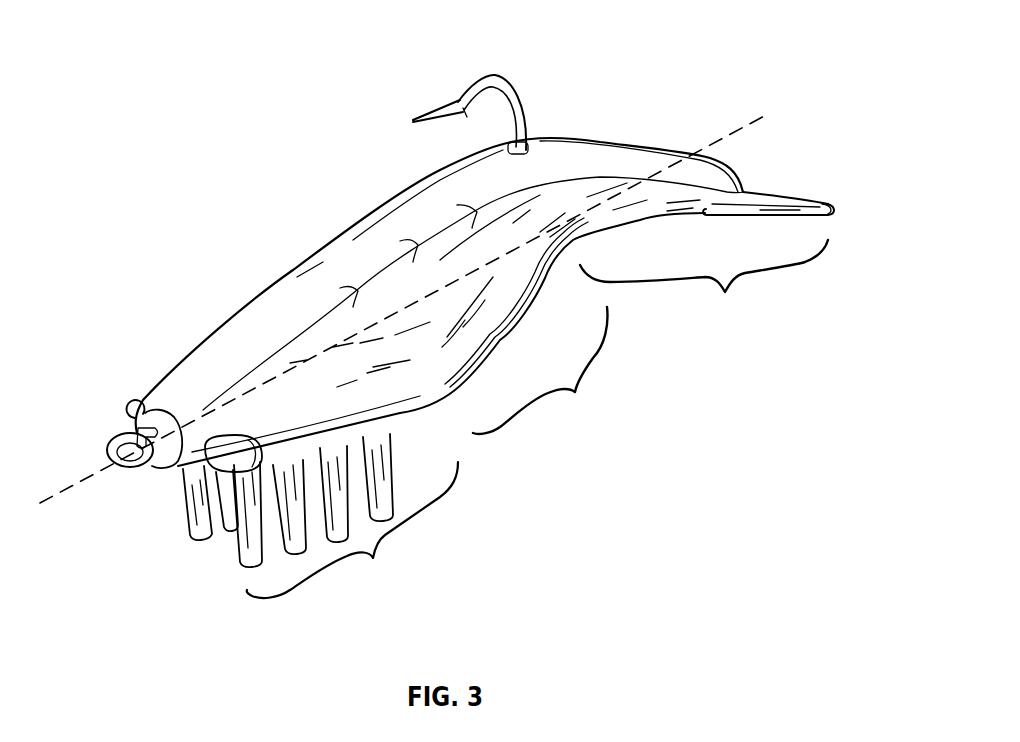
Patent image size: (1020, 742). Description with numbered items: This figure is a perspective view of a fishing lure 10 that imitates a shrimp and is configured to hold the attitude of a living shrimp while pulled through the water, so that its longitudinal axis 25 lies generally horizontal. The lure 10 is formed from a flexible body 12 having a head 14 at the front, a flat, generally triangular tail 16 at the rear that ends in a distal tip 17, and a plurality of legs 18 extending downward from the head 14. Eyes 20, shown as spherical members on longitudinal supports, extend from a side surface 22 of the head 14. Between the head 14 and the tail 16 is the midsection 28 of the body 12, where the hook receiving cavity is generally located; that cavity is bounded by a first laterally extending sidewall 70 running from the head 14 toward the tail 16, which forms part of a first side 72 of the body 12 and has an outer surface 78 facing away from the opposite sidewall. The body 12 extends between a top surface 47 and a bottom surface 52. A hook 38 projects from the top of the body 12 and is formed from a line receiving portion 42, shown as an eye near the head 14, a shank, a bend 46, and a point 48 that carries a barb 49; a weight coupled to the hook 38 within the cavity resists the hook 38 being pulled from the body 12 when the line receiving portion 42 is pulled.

The fishing lure 10 is at (253, 201).
The body 12 is at (291, 270).
The head 14 is at (320, 516).
The tail 16 is at (707, 260).
The second distal tip 17 is at (830, 207).
The plurality of legs 18 is at (370, 468).
The eyes 20 is at (131, 402).
The side surface 22 is at (201, 391).
The longitudinal axis 25 is at (643, 183).
The midsection 28 is at (540, 370).
The hook 38 is at (438, 102).
The line receiving portion 42 is at (107, 451).
The bend 46 is at (525, 96).
The top surface 47 is at (400, 197).
The point 48 is at (410, 122).
The barb 49 is at (467, 117).
The bottom surface 52 is at (510, 327).
The first laterally extending sidewall 70 is at (463, 327).
The first side 72 is at (442, 347).
The outer surface 78 is at (502, 287).